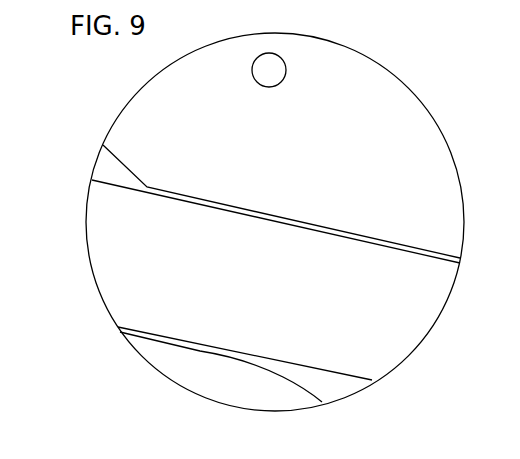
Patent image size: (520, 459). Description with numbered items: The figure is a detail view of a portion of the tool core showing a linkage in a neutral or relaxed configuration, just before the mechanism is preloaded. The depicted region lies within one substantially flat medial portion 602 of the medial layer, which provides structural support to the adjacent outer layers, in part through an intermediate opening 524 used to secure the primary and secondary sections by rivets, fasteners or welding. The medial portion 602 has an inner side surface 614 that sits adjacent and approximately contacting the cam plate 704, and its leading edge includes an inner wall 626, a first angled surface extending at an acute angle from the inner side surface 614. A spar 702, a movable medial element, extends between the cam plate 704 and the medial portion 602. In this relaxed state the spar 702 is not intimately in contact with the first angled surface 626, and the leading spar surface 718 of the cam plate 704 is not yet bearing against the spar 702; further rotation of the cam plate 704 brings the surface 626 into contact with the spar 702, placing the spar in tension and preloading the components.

The intermediate opening 524 is at (271, 68).
The medial portion 602 is at (373, 120).
The inner side surface 614 is at (123, 174).
The inner wall 626 is at (335, 232).
The spar 702 is at (362, 347).
The cam plate 704 is at (210, 385).
The leading spar surface 718 is at (168, 342).